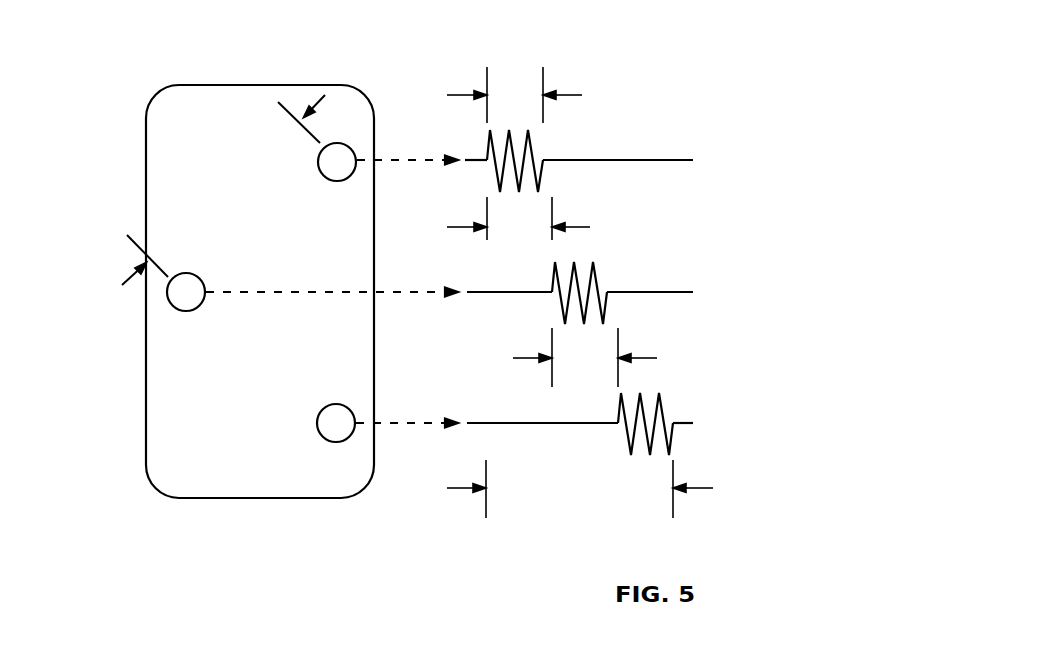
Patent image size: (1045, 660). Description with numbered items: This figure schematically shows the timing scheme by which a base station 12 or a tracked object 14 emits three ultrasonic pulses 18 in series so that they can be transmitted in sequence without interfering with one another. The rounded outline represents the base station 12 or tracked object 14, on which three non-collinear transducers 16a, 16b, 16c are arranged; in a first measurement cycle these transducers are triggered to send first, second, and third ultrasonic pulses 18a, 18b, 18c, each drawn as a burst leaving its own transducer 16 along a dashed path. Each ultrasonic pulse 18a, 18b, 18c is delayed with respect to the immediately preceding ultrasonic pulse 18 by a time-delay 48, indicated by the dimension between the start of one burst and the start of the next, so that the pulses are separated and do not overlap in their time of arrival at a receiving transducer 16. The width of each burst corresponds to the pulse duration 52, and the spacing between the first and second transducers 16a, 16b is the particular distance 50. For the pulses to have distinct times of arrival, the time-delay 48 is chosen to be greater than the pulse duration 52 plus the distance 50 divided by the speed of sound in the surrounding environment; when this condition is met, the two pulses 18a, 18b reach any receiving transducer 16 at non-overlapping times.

The base station 12 is at (212, 267).
The tracked object 14 is at (190, 72).
The transducer 16 is at (261, 268).
The first transducer 16a is at (315, 175).
The second transducer 16b is at (207, 276).
The third transducer 16c is at (313, 409).
The ultrasonic pulse 18 is at (641, 289).
The first ultrasonic pulse 18a is at (552, 149).
The second ultrasonic pulse 18b is at (617, 279).
The third ultrasonic pulse 18c is at (684, 401).
The time-delay 48 is at (461, 224).
The distance 50 is at (146, 262).
The pulse duration 52 is at (461, 92).